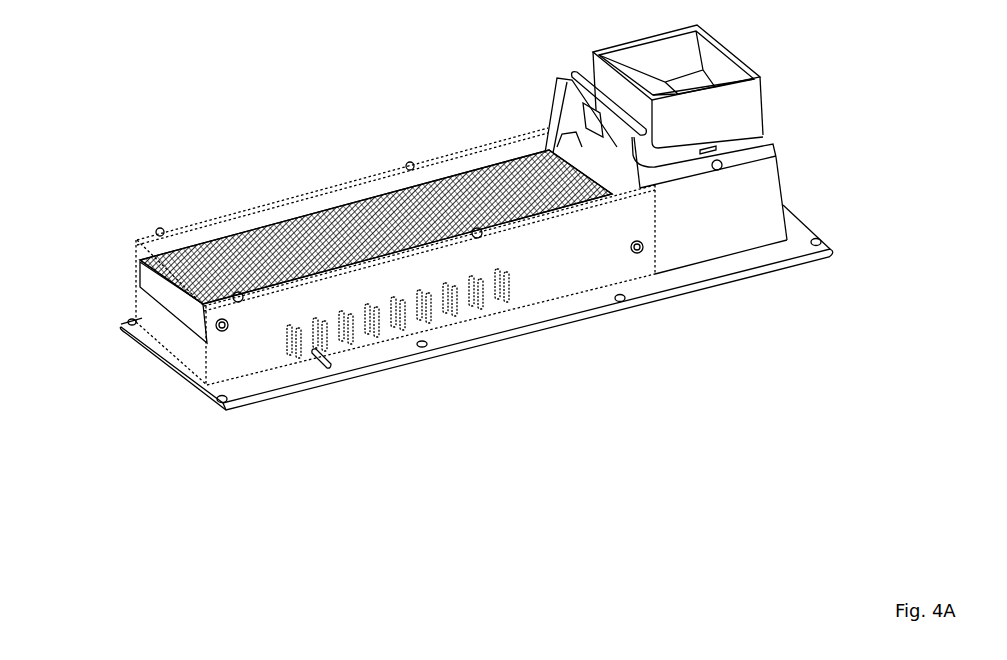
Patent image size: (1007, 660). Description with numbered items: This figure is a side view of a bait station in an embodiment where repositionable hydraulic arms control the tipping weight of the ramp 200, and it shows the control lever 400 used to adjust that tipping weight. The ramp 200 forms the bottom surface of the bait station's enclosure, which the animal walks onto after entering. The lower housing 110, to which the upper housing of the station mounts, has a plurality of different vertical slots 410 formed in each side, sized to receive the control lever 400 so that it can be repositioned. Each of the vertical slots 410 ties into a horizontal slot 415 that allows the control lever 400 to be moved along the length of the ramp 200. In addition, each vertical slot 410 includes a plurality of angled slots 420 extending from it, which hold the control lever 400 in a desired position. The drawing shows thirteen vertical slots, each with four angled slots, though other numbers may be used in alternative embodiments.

The lower housing 110 is at (598, 250).
The ramp 200 is at (138, 262).
The control lever 400 is at (322, 365).
The vertical slots 410 is at (498, 300).
The horizontal slot 415 is at (294, 331).
The angled slots 420 is at (393, 333).